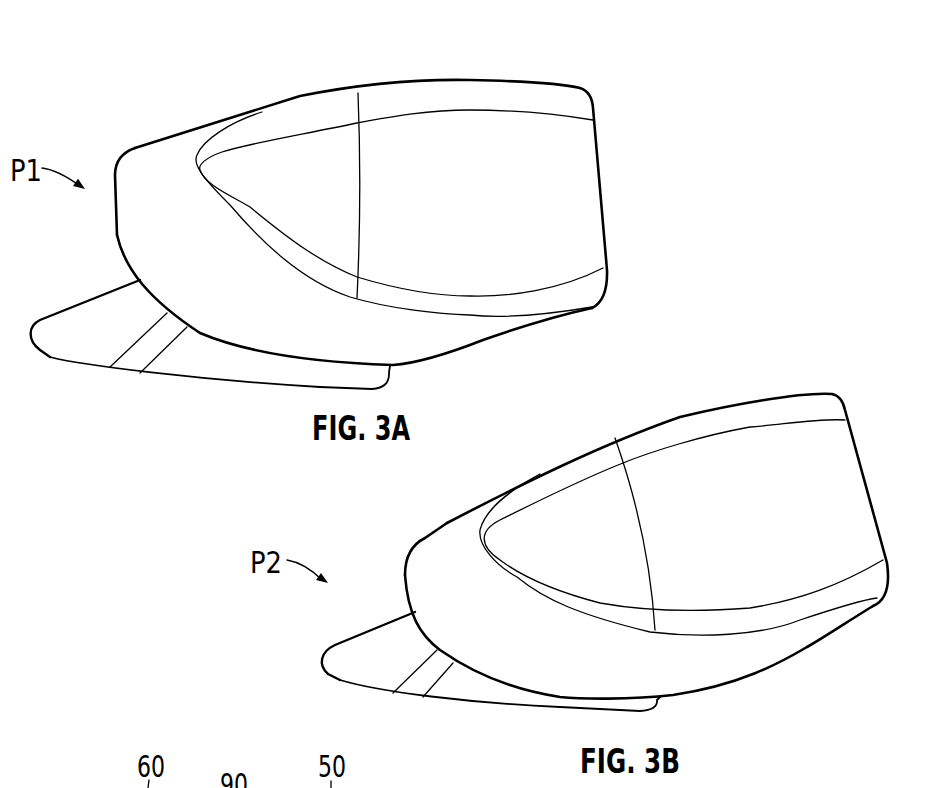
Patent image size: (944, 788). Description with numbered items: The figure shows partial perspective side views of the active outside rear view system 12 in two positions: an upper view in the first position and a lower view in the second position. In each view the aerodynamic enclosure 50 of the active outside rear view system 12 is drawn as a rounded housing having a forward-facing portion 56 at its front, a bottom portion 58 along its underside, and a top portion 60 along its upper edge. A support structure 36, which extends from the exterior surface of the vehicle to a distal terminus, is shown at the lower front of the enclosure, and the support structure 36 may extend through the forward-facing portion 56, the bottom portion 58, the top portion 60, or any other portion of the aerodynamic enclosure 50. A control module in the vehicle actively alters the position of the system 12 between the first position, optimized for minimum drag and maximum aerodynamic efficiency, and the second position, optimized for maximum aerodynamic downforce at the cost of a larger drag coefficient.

In FIG. 3A, the active outside rear view system 12 is at (104, 96).
In FIG. 3B, the active outside rear view system 12 is at (440, 492).
In FIG. 3A, the support structure 36 is at (90, 300).
In FIG. 3B, the support structure 36 is at (333, 646).
In FIG. 3A, the aerodynamic enclosure 50 is at (506, 80).
In FIG. 3B, the aerodynamic enclosure 50 is at (776, 392).
In FIG. 3A, the forward-facing portion 56 is at (115, 215).
In FIG. 3B, the forward-facing portion 56 is at (407, 578).
In FIG. 3A, the bottom portion 58 is at (490, 340).
In FIG. 3B, the bottom portion 58 is at (757, 667).
In FIG. 3A, the top portion 60 is at (407, 83).
In FIG. 3B, the top portion 60 is at (720, 404).